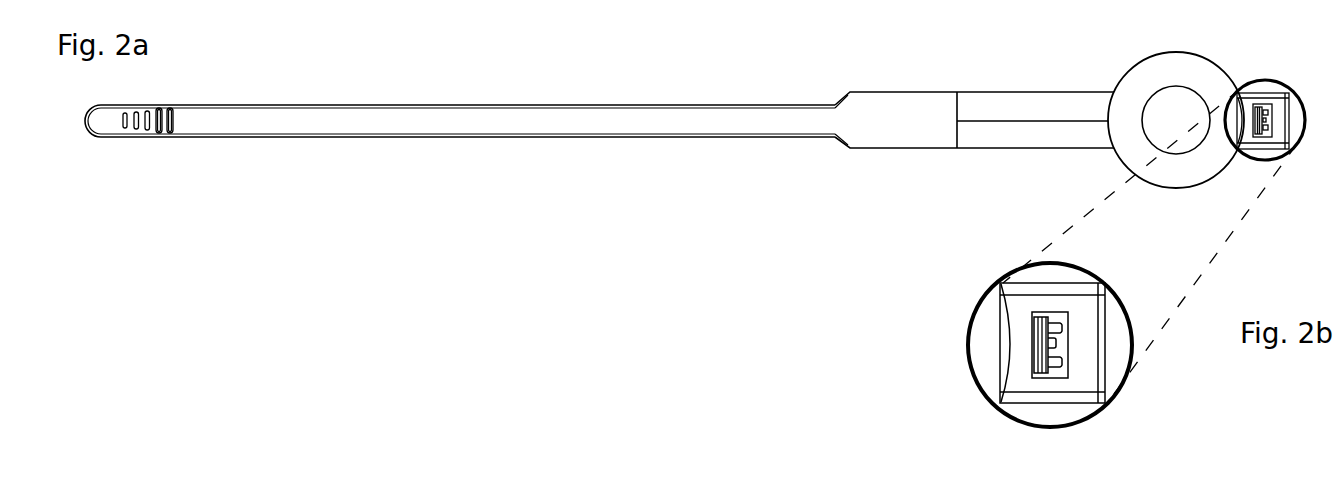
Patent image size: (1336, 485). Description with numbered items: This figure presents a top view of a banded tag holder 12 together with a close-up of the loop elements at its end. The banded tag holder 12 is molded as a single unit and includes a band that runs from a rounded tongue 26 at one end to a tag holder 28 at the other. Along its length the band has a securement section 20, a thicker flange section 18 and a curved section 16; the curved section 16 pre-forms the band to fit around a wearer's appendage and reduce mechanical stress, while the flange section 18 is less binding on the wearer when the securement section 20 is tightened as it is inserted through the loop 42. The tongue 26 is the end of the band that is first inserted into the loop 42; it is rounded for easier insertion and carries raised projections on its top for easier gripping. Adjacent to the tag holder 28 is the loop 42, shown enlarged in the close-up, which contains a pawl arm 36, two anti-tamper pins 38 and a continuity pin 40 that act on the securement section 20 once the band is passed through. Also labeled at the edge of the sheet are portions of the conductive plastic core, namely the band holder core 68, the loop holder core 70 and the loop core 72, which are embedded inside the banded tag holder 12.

In FIG. 2A, the banded tag holder 12 is at (695, 138).
In FIG. 2A, the curved section 16 is at (982, 149).
In FIG. 2A, the flange section 18 is at (858, 149).
In FIG. 2A, the securement section 20 is at (515, 137).
In FIG. 2A, the tongue 26 is at (146, 143).
In FIG. 2A, the tag holder 28 is at (1117, 159).
In FIG. 2B, the pawl arm 36 is at (1038, 375).
In FIG. 2B, the anti-tamper pins 38 is at (1071, 328).
In FIG. 2B, the continuity pin 40 is at (1062, 343).
In FIG. 2A, the loop 42 is at (1267, 157).
In FIG. 2B, the loop 42 is at (1020, 323).
In FIG. 2B, the band holder core 68 is at (1076, 479).
In FIG. 2B, the loop holder core 70 is at (1212, 484).
In FIG. 2B, the loop core 72 is at (1271, 476).